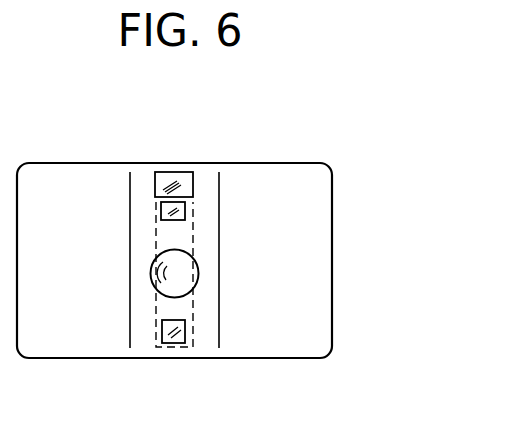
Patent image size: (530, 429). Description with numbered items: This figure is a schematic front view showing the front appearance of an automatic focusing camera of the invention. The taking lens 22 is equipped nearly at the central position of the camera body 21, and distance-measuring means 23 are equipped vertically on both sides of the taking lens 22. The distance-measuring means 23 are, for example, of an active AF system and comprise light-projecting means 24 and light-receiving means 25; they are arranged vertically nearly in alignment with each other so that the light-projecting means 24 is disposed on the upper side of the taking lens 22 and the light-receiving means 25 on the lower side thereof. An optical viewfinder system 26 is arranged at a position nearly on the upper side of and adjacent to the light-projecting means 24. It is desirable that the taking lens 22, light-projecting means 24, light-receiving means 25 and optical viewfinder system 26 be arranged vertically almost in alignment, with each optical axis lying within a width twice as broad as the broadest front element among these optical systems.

The camera body 21 is at (332, 268).
The taking lens 22 is at (175, 271).
The distance-measuring means 23 is at (190, 306).
The light-projecting means 24 is at (186, 211).
The light-receiving means 25 is at (173, 343).
The optical viewfinder system 26 is at (172, 184).